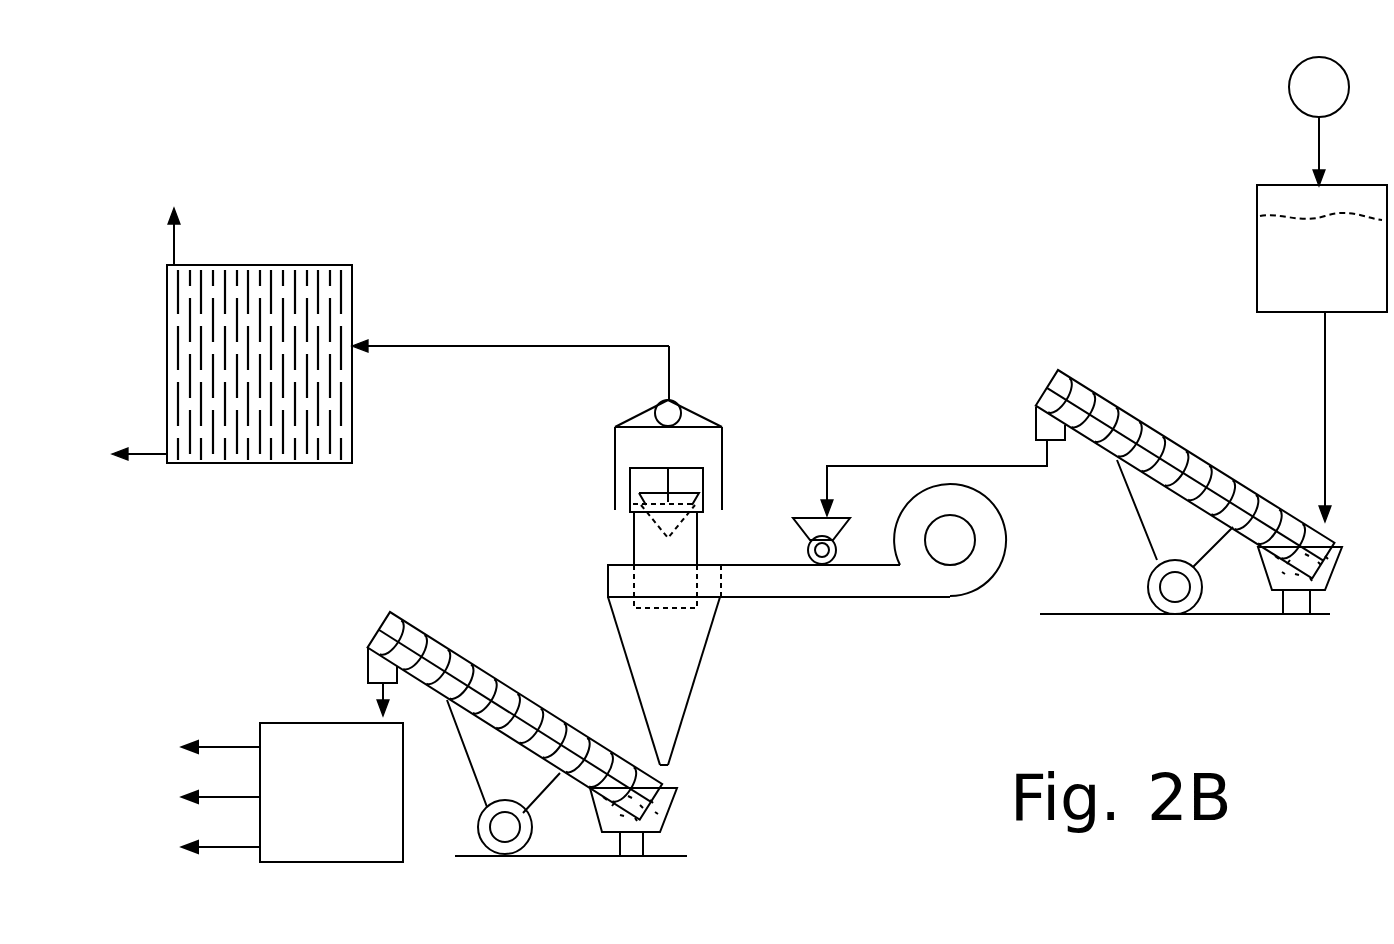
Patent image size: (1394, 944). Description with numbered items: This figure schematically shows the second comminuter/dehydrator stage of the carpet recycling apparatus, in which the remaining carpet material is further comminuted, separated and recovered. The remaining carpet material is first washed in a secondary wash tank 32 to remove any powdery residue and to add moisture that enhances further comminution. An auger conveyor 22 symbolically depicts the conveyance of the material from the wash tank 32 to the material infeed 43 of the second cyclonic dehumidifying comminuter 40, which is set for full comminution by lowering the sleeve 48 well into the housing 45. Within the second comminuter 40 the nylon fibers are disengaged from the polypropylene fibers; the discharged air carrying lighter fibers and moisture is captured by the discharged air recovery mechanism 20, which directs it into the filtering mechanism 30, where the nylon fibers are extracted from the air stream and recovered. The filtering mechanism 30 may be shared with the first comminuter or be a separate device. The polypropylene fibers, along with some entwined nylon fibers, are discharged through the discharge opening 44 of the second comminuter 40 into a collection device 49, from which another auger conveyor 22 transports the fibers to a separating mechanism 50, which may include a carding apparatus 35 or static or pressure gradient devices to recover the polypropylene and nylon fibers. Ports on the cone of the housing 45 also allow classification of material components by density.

The discharged air recovery mechanism 20 is at (672, 398).
The auger conveyor 22 is at (447, 643).
The filtering mechanism 30 is at (352, 272).
The secondary wash tank 32 is at (1277, 185).
The carding apparatus 35 is at (258, 680).
The second cyclonic dehumidifying comminuter 40 is at (558, 470).
The material infeed 43 is at (793, 518).
The discharge opening 44 is at (668, 765).
The housing 45 is at (700, 668).
The sleeve 48 is at (634, 548).
The collection device 49 is at (673, 813).
The separating mechanism 50 is at (317, 723).